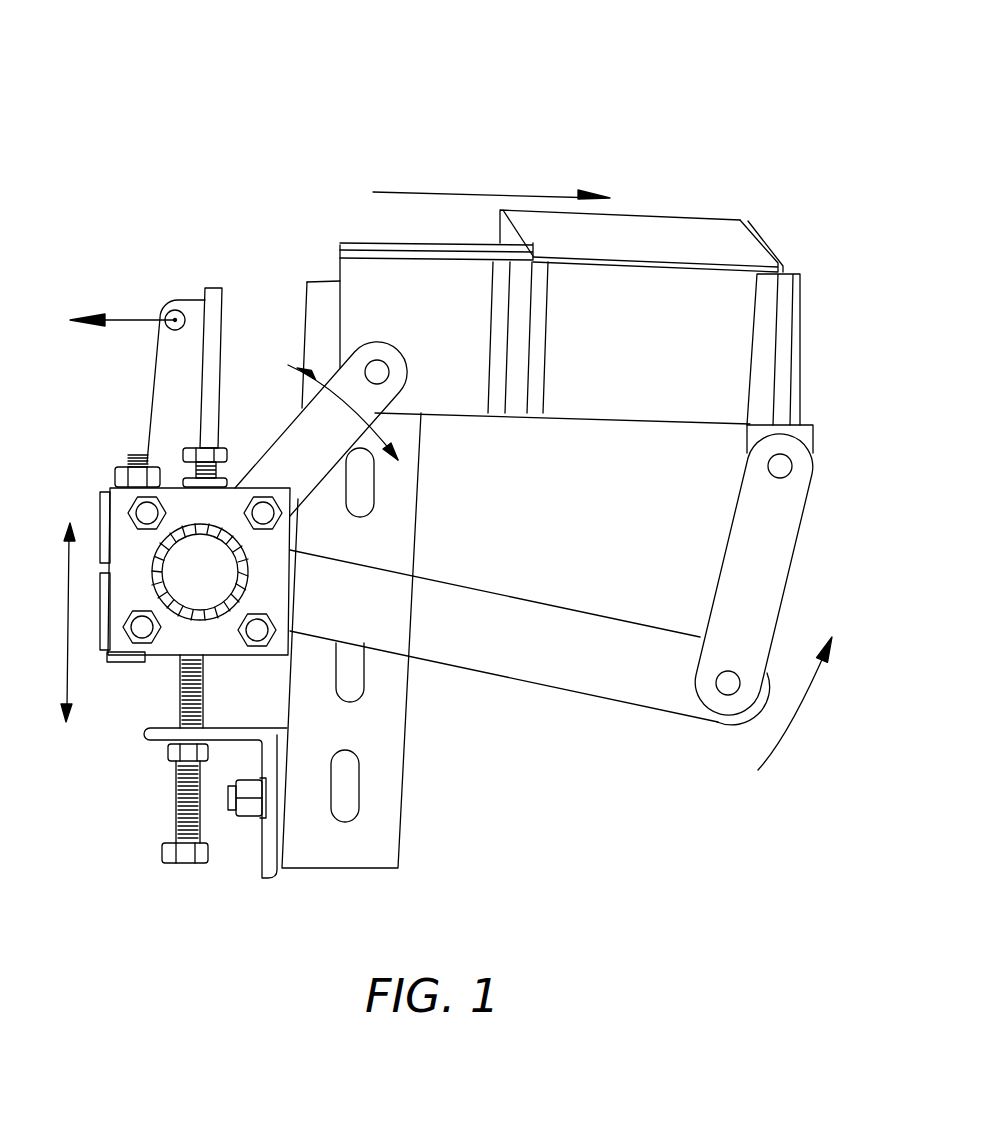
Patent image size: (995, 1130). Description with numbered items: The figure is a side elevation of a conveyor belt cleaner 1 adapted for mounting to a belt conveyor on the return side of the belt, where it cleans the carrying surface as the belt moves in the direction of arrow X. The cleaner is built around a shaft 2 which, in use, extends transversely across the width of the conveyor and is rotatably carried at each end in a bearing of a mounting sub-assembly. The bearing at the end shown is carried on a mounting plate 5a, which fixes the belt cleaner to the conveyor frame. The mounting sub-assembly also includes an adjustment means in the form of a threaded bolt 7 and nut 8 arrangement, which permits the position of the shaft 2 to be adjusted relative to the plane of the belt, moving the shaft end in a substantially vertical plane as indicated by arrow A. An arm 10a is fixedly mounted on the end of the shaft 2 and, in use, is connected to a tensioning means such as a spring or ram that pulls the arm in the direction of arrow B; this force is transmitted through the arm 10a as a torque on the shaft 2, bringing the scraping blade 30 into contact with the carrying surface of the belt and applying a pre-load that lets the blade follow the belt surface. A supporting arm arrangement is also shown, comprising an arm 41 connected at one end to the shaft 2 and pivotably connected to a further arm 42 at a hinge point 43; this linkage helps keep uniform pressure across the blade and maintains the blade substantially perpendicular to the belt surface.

The conveyor belt cleaner 1 is at (285, 133).
The shaft 2 is at (248, 583).
The mounting plate 5a is at (375, 860).
The threaded bolt 7 is at (178, 810).
The nut 8 is at (170, 748).
The arm 10a is at (168, 360).
The scraping blade 30 is at (780, 333).
The arm 41 is at (592, 680).
The arm 42 is at (782, 550).
The hinge point 43 is at (728, 687).